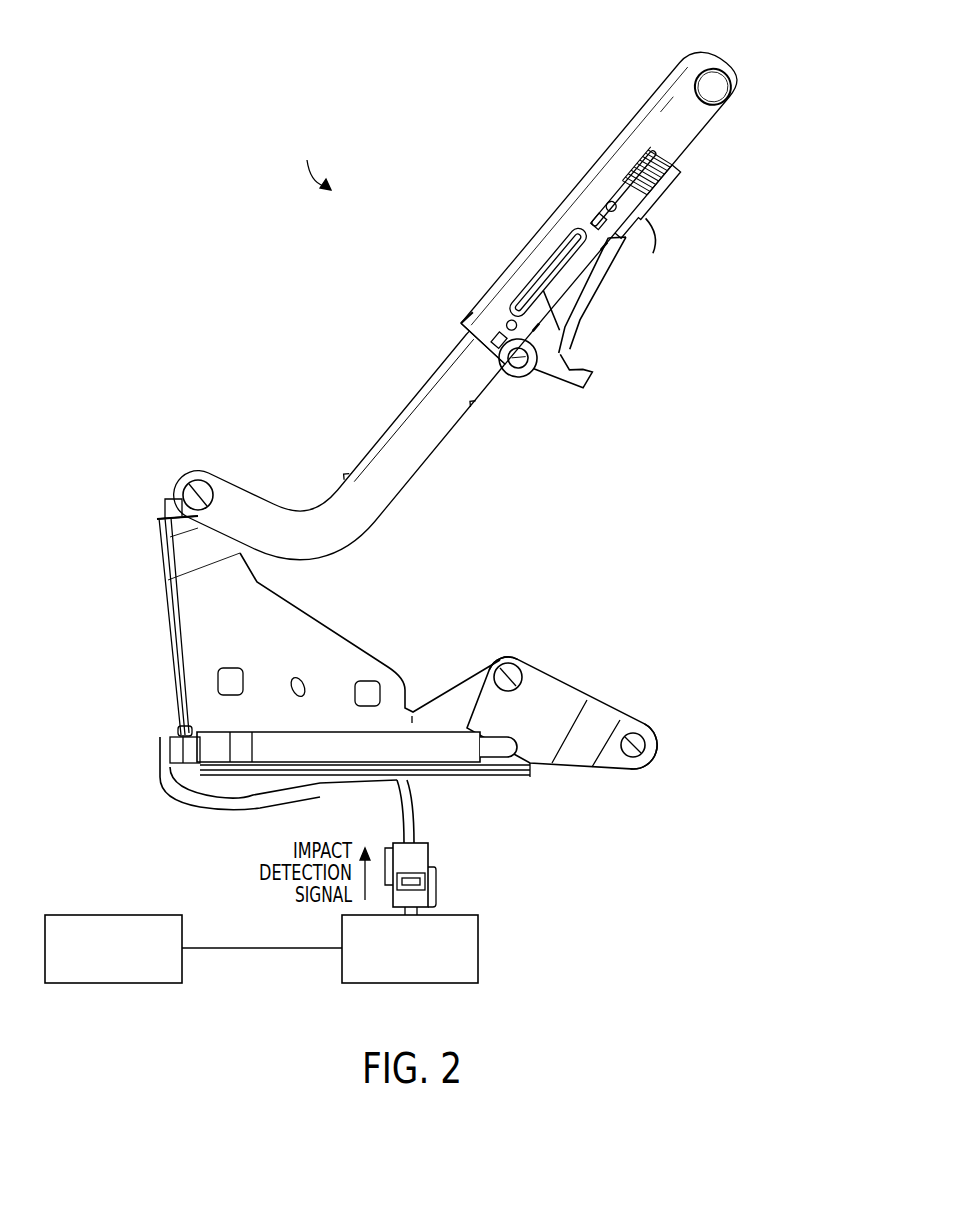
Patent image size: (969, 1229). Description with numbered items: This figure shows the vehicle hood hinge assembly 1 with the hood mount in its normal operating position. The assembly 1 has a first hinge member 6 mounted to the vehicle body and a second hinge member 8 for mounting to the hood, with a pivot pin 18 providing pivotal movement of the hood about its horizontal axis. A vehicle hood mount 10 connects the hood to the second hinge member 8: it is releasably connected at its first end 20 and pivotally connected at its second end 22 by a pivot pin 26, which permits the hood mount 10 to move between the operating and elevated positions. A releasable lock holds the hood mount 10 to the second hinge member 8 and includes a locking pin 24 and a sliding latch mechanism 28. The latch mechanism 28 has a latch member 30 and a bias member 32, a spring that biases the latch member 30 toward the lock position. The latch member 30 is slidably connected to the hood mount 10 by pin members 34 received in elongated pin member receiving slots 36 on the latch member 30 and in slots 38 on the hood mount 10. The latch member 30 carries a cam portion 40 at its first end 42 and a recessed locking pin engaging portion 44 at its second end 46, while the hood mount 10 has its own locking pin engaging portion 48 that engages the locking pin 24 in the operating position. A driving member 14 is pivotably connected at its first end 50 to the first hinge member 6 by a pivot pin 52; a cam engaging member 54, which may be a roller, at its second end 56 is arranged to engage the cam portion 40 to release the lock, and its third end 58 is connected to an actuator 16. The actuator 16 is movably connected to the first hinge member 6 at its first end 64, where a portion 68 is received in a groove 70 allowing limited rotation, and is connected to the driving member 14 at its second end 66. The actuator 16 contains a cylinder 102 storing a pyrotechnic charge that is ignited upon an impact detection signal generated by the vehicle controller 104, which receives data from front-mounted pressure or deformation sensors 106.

The vehicle hood hinge assembly 1 is at (313, 163).
The first hinge member 6 is at (163, 580).
The second hinge member 8 is at (410, 398).
The vehicle hood mount 10 is at (482, 300).
The driving member 14 is at (573, 705).
The actuator 16 is at (360, 740).
The pivot pin 18 is at (212, 486).
The first end 20 is at (478, 370).
The second end 22 is at (720, 70).
The locking pin 24 is at (532, 374).
The pivot pin 26 is at (727, 93).
The sliding latch mechanism 28 is at (665, 208).
The latch member 30 is at (623, 240).
The bias member 32 is at (668, 170).
The pin members 34 is at (600, 210).
The pin member receiving slots 36 is at (601, 240).
The pin member receiving slots 38 is at (604, 208).
The cam portion 40 is at (648, 224).
The first end 42 is at (672, 197).
The locking pin engaging portion 44 is at (542, 344).
The second end 46 is at (512, 372).
The locking pin engaging portion 48 is at (478, 336).
The first end 50 is at (518, 658).
The pivot pin 52 is at (505, 661).
The cam engaging member 54 is at (658, 742).
The second end 56 is at (648, 766).
The third end 58 is at (487, 762).
The first end 64 is at (176, 788).
The second end 66 is at (482, 758).
The portion 68 is at (182, 748).
The groove 70 is at (178, 732).
The cylinder 102 is at (263, 748).
The vehicle controller 104 is at (457, 915).
The sensors 106 is at (118, 915).